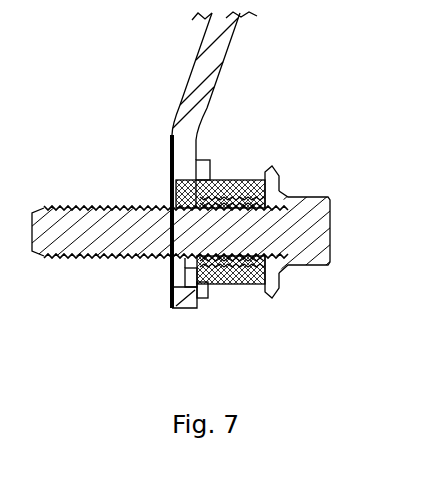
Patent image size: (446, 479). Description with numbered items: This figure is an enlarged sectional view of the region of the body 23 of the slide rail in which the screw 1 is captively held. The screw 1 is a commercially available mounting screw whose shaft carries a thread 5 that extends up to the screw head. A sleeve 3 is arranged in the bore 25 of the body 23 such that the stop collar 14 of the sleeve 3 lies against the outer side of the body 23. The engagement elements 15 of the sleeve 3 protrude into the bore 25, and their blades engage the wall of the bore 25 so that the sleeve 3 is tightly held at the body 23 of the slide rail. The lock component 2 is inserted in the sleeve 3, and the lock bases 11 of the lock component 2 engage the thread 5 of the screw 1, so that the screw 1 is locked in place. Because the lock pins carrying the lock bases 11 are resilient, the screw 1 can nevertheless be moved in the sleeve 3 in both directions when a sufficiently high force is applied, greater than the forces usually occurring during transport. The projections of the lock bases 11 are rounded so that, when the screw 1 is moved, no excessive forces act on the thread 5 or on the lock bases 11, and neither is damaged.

The screw 1 is at (204, 250).
The lock component 2 is at (190, 225).
The sleeve 3 is at (212, 182).
The thread 5 is at (87, 257).
The lock bases 11 is at (232, 181).
The stop collar 14 is at (172, 307).
The engagement elements 15 is at (172, 178).
The body 23 is at (199, 53).
The bore 25 is at (173, 193).